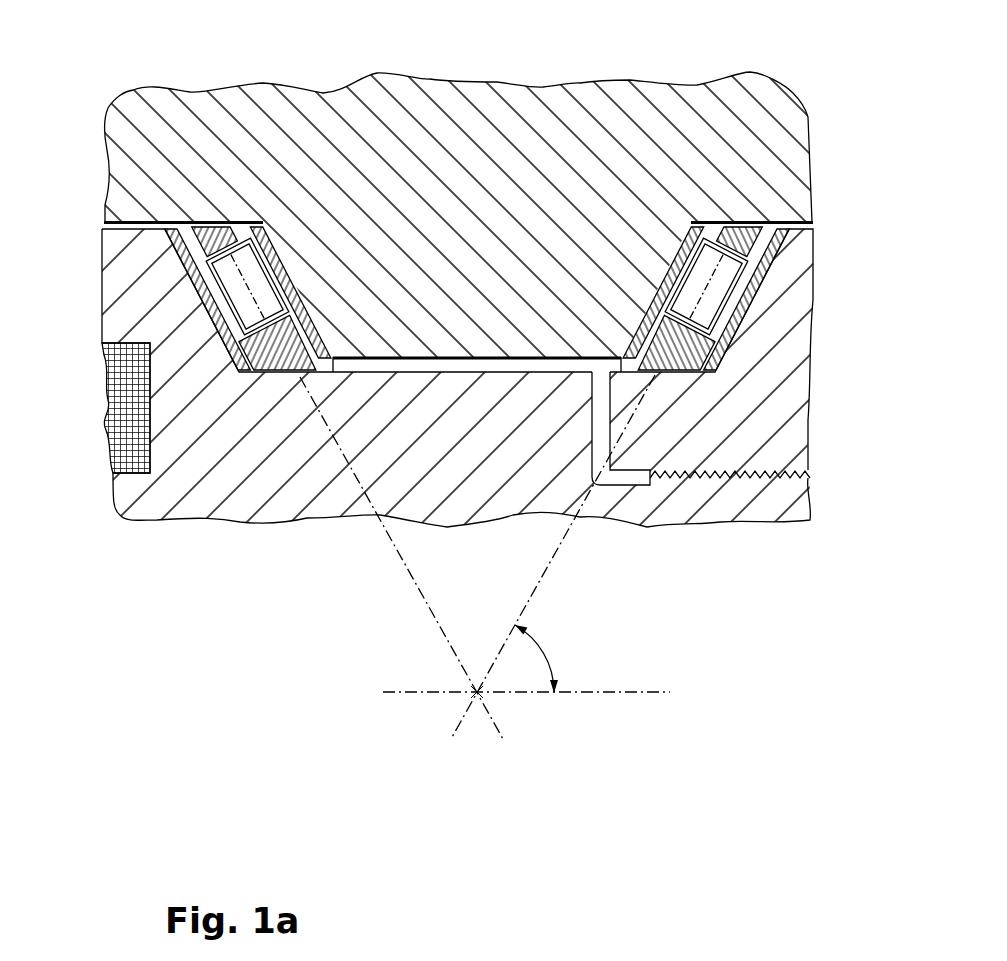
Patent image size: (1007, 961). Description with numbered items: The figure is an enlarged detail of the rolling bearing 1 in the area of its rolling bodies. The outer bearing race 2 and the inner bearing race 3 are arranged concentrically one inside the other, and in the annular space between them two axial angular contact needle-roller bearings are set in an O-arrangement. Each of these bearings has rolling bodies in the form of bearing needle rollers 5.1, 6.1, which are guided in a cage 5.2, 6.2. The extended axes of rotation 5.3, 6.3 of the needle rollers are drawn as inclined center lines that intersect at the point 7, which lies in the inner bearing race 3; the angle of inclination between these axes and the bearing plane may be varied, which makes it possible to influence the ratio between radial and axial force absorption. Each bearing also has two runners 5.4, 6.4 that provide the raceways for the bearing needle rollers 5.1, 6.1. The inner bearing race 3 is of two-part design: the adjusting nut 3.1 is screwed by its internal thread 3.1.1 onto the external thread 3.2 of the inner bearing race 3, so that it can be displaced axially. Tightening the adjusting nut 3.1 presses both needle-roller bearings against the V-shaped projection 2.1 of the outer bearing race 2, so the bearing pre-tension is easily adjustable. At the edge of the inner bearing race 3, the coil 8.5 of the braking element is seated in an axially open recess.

The rolling bearing 1 is at (646, 70).
The outer bearing race 2 is at (493, 103).
The V-shaped projection 2.1 is at (479, 345).
The inner bearing race 3 is at (240, 503).
The adjusting nut 3.1 is at (753, 407).
The internal thread 3.1.1 is at (720, 479).
The external thread 3.2 is at (777, 457).
The bearing needle rollers 5.1 is at (718, 287).
The cage 5.2 is at (762, 251).
The extended axis of rotation 5.3 is at (536, 588).
The runners 5.4 is at (745, 322).
The bearing needle rollers 6.1 is at (235, 278).
The cage 6.2 is at (203, 252).
The extended axis of rotation 6.3 is at (417, 587).
The runners 6.4 is at (208, 315).
The point 7 is at (473, 694).
The coil 8.5 is at (113, 407).